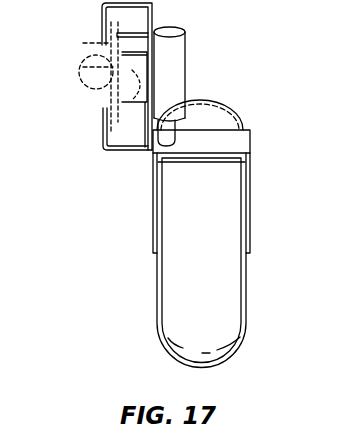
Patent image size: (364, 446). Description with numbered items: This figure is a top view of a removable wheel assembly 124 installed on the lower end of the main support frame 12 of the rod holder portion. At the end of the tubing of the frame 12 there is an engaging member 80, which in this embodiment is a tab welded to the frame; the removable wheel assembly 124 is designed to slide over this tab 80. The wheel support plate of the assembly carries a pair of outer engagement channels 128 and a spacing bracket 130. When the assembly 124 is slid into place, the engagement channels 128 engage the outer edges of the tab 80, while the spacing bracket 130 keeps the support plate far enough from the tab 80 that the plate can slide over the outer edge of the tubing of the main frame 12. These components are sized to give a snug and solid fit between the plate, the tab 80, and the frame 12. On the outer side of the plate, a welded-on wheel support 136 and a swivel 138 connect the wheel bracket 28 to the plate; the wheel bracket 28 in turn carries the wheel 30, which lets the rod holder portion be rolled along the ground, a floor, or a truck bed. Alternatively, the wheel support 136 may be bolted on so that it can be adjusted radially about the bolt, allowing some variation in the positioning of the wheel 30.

The main support frame 12 is at (88, 62).
The wheel bracket 28 is at (250, 203).
The wheel 30 is at (248, 287).
The engaging member 80 is at (107, 93).
The removable wheel assembly 124 is at (203, 95).
The outer engagement channels 128 is at (103, 23).
The spacing bracket 130 is at (147, 100).
The wheel support 136 is at (188, 63).
The swivel 138 is at (215, 108).